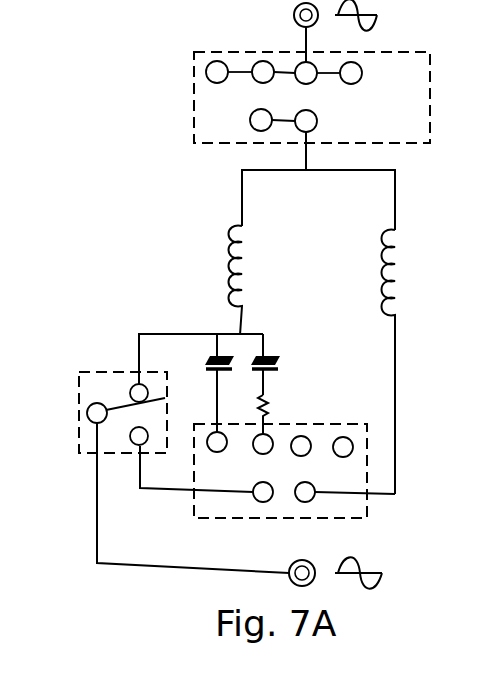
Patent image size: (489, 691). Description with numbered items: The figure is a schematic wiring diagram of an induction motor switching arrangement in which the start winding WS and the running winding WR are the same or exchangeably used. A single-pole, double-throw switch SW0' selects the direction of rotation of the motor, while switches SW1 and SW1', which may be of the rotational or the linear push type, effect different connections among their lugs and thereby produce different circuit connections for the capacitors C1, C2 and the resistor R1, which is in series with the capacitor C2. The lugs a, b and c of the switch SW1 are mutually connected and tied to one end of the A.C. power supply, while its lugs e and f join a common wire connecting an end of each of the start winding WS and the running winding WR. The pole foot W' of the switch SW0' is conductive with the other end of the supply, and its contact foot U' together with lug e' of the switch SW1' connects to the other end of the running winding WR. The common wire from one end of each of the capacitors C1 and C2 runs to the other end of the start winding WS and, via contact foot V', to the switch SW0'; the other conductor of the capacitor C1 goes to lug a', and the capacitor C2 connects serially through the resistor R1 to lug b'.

The switch SW1 is at (341, 97).
The switch SW1' is at (315, 476).
The single-pole, double-throw switch SW0' is at (114, 397).
The start winding WS is at (211, 280).
The running winding WR is at (416, 362).
The capacitor C1 is at (205, 383).
The capacitor C2 is at (281, 364).
The resistor R1 is at (276, 414).